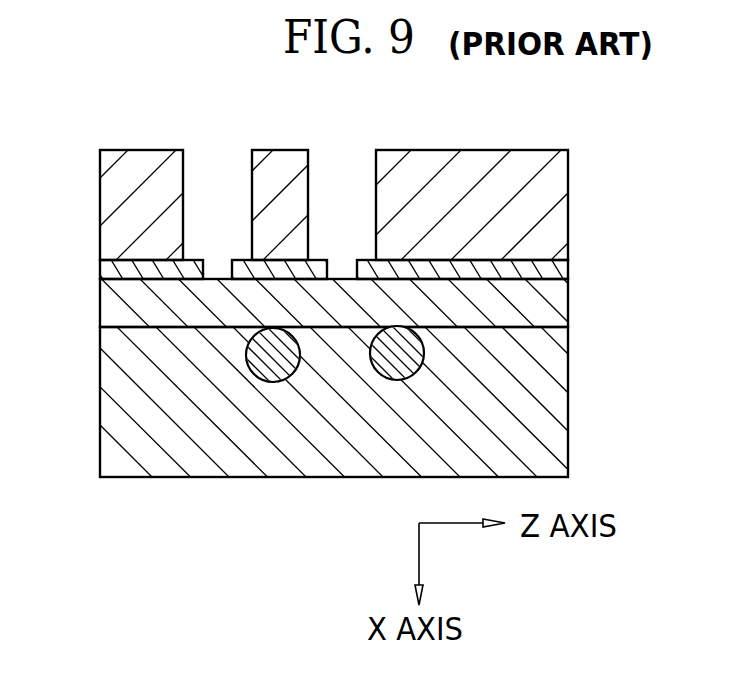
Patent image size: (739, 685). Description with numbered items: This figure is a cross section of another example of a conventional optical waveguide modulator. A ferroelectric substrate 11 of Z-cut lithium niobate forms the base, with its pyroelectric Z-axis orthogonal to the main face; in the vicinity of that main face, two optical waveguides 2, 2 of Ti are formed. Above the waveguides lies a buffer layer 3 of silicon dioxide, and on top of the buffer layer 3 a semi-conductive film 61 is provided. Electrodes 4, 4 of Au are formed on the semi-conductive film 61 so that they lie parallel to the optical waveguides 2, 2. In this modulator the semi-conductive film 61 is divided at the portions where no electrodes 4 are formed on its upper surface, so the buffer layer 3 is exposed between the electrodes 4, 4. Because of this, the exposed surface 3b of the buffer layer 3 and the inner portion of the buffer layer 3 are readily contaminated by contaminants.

The electrode 4 is at (138, 150).
The semi-conductive film 61 is at (100, 270).
The surface of the buffer layer 3b is at (215, 279).
The buffer layer 3 is at (105, 305).
The optical waveguide 2 is at (252, 357).
The ferroelectric substrate 11 is at (150, 402).